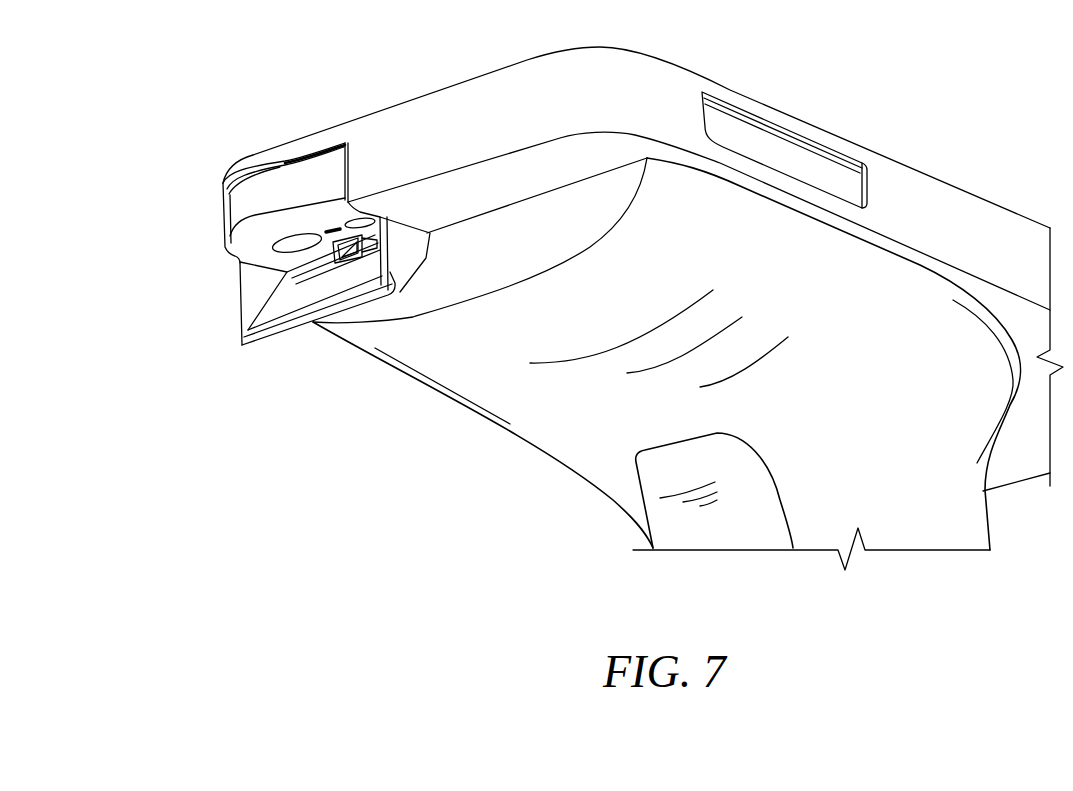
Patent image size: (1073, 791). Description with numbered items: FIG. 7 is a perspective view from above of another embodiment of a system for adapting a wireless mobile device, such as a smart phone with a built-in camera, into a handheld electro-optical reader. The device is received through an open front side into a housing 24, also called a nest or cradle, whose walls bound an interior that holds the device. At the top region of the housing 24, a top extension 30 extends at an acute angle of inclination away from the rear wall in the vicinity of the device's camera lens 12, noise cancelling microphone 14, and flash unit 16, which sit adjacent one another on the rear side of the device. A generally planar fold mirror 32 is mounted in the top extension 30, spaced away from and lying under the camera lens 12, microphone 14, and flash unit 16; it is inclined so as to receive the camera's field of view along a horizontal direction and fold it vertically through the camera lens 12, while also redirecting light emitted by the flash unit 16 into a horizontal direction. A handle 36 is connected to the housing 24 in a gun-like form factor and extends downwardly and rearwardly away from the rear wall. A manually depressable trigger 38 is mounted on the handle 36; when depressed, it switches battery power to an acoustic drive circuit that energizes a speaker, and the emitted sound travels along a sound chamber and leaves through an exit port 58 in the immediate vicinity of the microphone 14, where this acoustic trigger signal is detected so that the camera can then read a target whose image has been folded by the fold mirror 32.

The camera lens 12 is at (282, 237).
The noise cancelling microphone 14 is at (330, 230).
The flash unit 16 is at (345, 217).
The housing 24 is at (945, 192).
The top extension 30 is at (398, 282).
The fold mirror 32 is at (290, 303).
The handle 36 is at (908, 532).
The trigger 38 is at (703, 529).
The exit port 58 is at (343, 264).